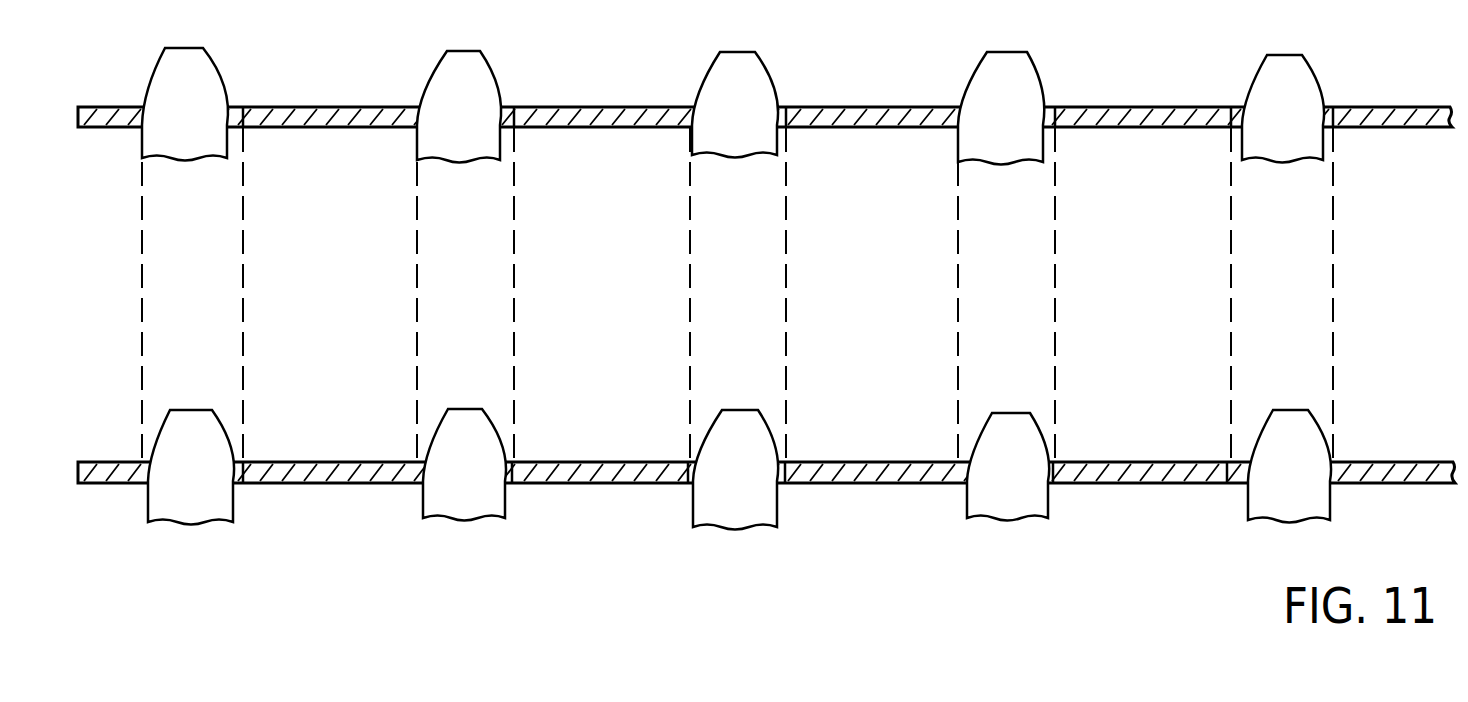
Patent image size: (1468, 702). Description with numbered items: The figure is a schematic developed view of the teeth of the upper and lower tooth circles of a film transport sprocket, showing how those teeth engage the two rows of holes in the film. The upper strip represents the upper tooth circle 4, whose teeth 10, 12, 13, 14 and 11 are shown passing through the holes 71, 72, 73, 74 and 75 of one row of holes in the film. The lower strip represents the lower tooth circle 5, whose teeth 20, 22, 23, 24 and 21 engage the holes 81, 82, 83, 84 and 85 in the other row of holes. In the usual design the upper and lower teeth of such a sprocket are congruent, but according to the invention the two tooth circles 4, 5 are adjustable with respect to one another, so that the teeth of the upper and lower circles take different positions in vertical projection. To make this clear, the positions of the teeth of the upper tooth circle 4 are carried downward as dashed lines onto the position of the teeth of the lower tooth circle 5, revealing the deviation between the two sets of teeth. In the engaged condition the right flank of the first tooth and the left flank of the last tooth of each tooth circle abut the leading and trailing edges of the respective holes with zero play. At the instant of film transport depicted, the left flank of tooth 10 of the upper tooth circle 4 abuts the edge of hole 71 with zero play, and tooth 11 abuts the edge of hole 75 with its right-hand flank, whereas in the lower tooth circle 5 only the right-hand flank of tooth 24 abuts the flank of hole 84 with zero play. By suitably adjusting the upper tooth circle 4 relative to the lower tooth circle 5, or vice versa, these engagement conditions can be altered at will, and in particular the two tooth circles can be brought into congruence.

The upper tooth circle 4 is at (1200, 69).
The lower tooth circle 5 is at (1158, 418).
The tooth 10 is at (200, 77).
The tooth 11 is at (1297, 72).
The tooth 12 is at (482, 72).
The tooth 13 is at (755, 73).
The tooth 14 is at (1023, 73).
The tooth 20 is at (180, 422).
The tooth 21 is at (1290, 418).
The tooth 22 is at (463, 420).
The tooth 23 is at (740, 420).
The tooth 24 is at (1009, 420).
The hole 71 is at (243, 128).
The hole 72 is at (514, 130).
The hole 73 is at (787, 132).
The hole 74 is at (1055, 133).
The hole 75 is at (1333, 133).
The hole 81 is at (242, 483).
The hole 82 is at (507, 485).
The hole 83 is at (786, 485).
The hole 84 is at (1050, 487).
The hole 85 is at (1237, 487).